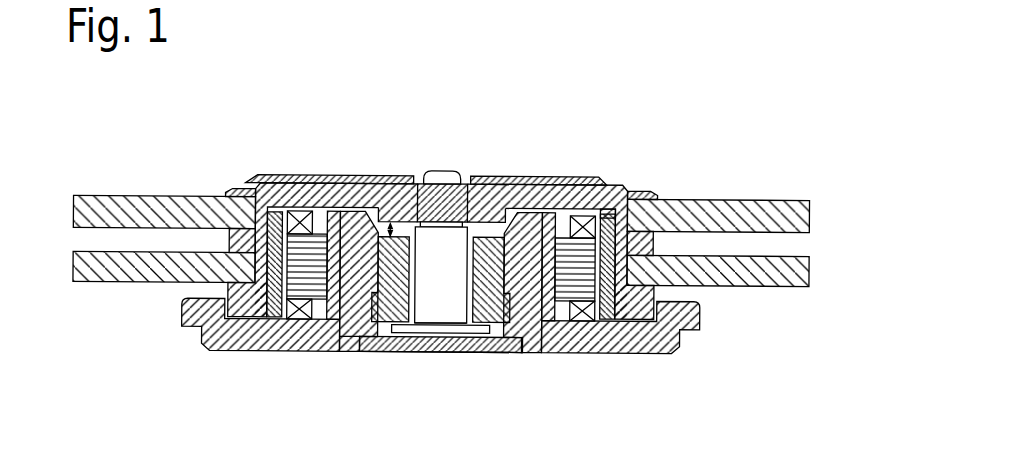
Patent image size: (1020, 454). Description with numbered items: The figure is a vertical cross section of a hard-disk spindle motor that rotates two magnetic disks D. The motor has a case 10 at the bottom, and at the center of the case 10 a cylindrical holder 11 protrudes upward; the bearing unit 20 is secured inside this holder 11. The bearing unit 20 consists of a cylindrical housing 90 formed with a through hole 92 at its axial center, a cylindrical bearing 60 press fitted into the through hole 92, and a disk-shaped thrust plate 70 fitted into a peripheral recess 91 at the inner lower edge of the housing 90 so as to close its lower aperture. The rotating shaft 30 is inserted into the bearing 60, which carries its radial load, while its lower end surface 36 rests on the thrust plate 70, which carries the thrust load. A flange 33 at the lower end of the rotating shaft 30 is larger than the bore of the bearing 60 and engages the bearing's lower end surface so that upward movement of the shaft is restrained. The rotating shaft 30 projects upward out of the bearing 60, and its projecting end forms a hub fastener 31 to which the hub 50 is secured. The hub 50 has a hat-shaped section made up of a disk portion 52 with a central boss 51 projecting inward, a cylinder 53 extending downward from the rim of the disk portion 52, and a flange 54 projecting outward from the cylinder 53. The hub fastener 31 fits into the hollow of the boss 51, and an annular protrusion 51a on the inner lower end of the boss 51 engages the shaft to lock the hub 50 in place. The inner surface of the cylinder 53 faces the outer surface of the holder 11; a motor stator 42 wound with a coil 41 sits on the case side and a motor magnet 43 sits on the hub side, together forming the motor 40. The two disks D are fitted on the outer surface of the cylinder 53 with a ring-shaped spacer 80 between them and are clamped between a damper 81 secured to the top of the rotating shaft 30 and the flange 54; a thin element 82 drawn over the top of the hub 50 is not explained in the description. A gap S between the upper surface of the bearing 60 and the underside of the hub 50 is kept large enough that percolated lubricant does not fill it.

The case 10 is at (645, 360).
The cylindrical holder 11 is at (613, 186).
The bearing unit 20 is at (412, 360).
The rotating shaft 30 is at (447, 295).
The hub fastener 31 is at (486, 202).
The flange 33 is at (470, 333).
The lower end surface 36 is at (430, 335).
The motor 40 is at (282, 323).
The coil 41 is at (583, 322).
The motor stator 42 is at (300, 285).
The motor magnet 43 is at (609, 328).
The hub 50 is at (323, 200).
The boss 51 is at (370, 188).
The annular protrusion 51a is at (450, 218).
The disk portion 52 is at (297, 182).
The cylinder 53 is at (238, 238).
The flange 54 is at (230, 298).
The bearing 60 is at (498, 352).
The thrust plate 70 is at (390, 355).
The spacer 80 is at (653, 244).
The damper 81 is at (430, 172).
The cover plate 82 is at (567, 176).
The housing 90 is at (348, 353).
The peripheral recess 91 is at (512, 333).
The through hole 92 is at (492, 236).
The magnetic disk D is at (105, 197).
The gap S is at (390, 222).